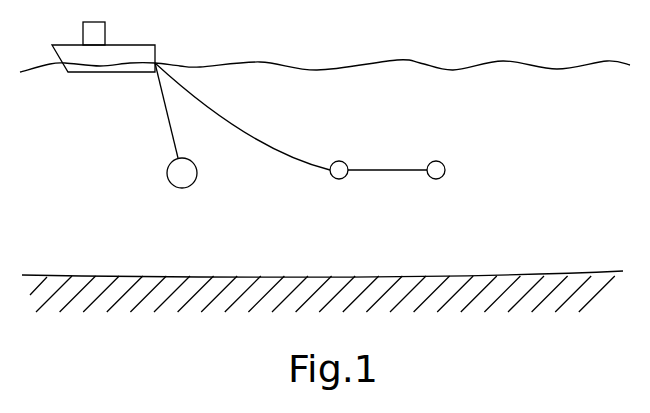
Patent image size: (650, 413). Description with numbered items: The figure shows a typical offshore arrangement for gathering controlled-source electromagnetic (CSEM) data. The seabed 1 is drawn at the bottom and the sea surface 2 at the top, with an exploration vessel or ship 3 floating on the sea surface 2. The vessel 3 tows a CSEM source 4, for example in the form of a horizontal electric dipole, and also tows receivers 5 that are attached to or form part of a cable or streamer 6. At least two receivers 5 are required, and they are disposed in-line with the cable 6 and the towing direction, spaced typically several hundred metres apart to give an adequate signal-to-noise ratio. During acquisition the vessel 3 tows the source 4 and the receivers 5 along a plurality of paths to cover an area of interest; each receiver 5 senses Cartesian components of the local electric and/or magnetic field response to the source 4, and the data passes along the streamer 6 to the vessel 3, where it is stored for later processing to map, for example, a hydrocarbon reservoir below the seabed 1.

The seabed 1 is at (508, 276).
The sea surface 2 is at (507, 61).
The exploration vessel 3 is at (134, 45).
The source 4 is at (168, 180).
The receivers 5 is at (339, 161).
The cable or streamer 6 is at (388, 171).